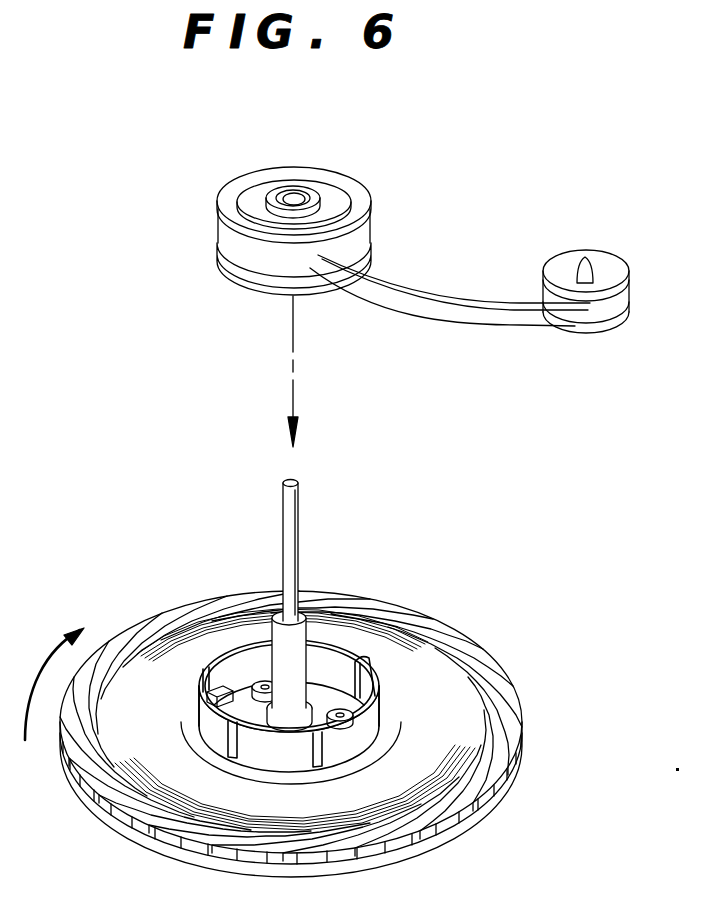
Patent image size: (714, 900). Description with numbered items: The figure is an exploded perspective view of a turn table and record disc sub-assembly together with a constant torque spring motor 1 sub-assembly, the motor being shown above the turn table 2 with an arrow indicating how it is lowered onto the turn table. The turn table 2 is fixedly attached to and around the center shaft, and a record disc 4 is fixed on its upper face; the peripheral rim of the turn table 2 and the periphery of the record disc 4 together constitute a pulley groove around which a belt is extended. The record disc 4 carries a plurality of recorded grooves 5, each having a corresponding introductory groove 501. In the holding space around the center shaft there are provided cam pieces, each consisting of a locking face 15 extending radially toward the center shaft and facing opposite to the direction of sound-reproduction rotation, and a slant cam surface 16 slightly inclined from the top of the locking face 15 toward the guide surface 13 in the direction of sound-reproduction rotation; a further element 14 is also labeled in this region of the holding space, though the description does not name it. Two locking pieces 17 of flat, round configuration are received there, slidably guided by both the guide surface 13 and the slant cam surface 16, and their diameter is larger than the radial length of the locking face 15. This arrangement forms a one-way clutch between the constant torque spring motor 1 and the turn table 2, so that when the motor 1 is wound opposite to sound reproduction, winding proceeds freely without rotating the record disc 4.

The constant torque spring motor 1 is at (414, 268).
The turn table 2 is at (405, 858).
The record disc 4 is at (517, 733).
The recorded grooves 5 is at (152, 795).
The guide surface 13 is at (385, 664).
The hub cup 14 is at (325, 700).
The locking face 15 is at (227, 685).
The slant cam surface 16 is at (240, 672).
The locking pieces 17 is at (352, 714).
The introductory groove 501 is at (102, 662).